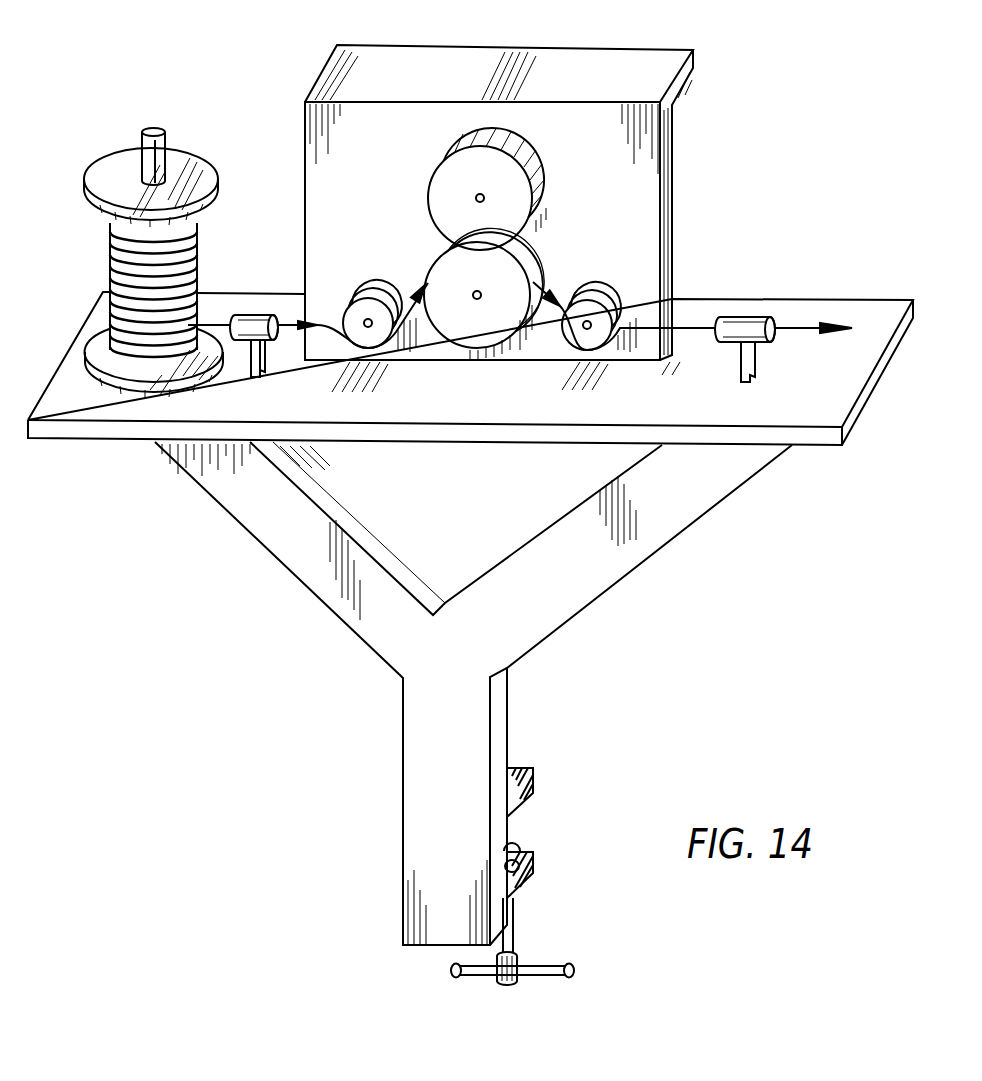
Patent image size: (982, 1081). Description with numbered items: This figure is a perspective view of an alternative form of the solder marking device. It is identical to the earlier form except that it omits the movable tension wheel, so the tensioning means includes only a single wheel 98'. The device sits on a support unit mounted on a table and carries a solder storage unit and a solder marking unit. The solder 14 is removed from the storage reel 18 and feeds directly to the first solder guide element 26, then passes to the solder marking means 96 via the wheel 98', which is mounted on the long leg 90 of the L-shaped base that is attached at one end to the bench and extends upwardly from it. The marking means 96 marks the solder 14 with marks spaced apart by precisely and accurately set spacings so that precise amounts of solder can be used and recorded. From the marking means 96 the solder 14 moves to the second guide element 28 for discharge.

The solder 14 is at (217, 322).
The storage reel 18 is at (197, 237).
The solder guide element 26 is at (250, 311).
The solder guide element 28 is at (746, 316).
The long leg 90 is at (667, 232).
The solder marking means 96 is at (536, 225).
The wheel 98' is at (379, 289).